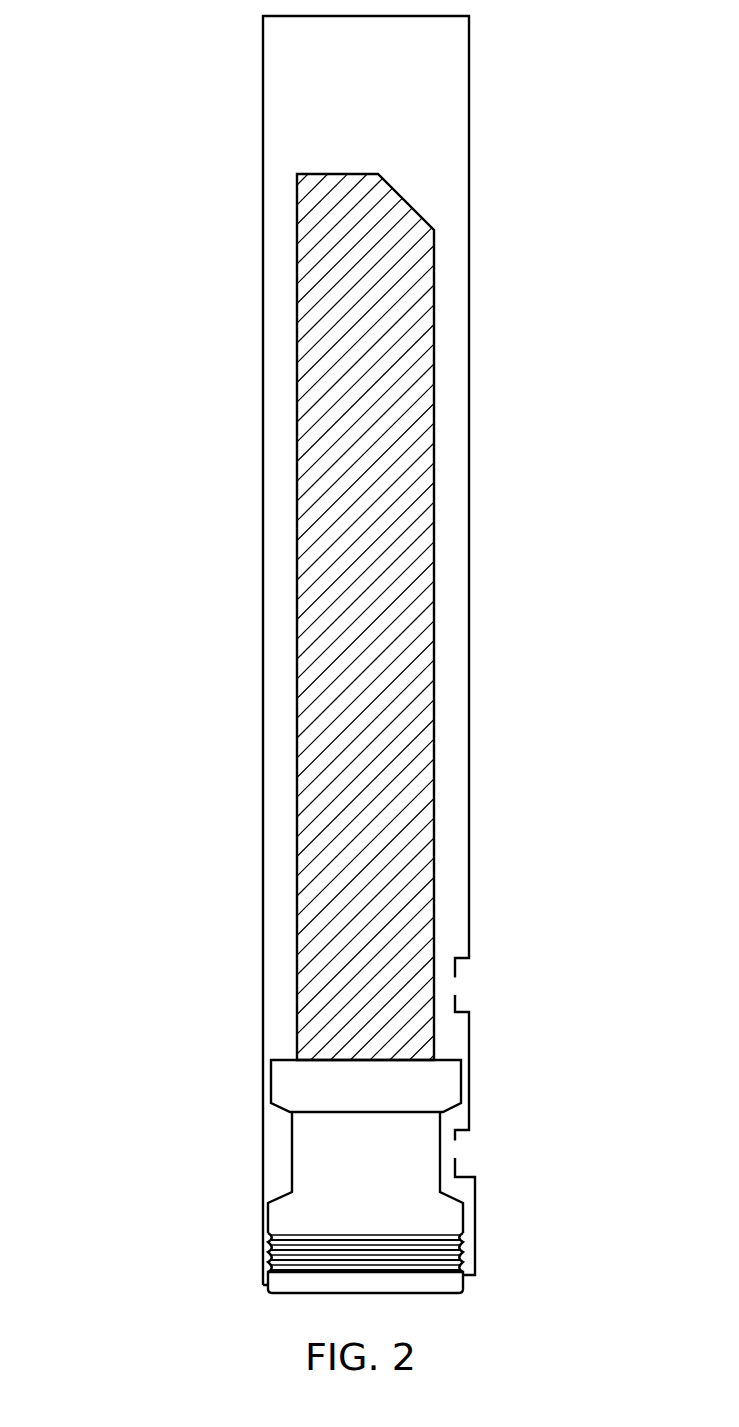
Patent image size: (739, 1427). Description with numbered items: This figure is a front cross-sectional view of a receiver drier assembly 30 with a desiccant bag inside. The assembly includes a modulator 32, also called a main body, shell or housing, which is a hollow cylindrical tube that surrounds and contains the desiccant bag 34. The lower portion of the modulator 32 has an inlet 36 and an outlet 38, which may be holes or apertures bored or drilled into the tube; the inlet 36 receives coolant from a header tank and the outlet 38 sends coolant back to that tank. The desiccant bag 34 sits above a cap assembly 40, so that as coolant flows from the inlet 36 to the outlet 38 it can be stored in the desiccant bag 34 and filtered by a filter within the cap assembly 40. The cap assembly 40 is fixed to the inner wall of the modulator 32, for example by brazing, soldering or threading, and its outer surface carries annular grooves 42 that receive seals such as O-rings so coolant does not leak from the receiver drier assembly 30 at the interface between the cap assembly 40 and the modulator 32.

The receiver drier assembly 30 is at (112, 104).
The modulator 32 is at (469, 82).
The desiccant bag 34 is at (400, 353).
The inlet 36 is at (478, 984).
The outlet 38 is at (482, 1154).
The cap assembly 40 is at (420, 1157).
The annular grooves 42 is at (265, 1258).